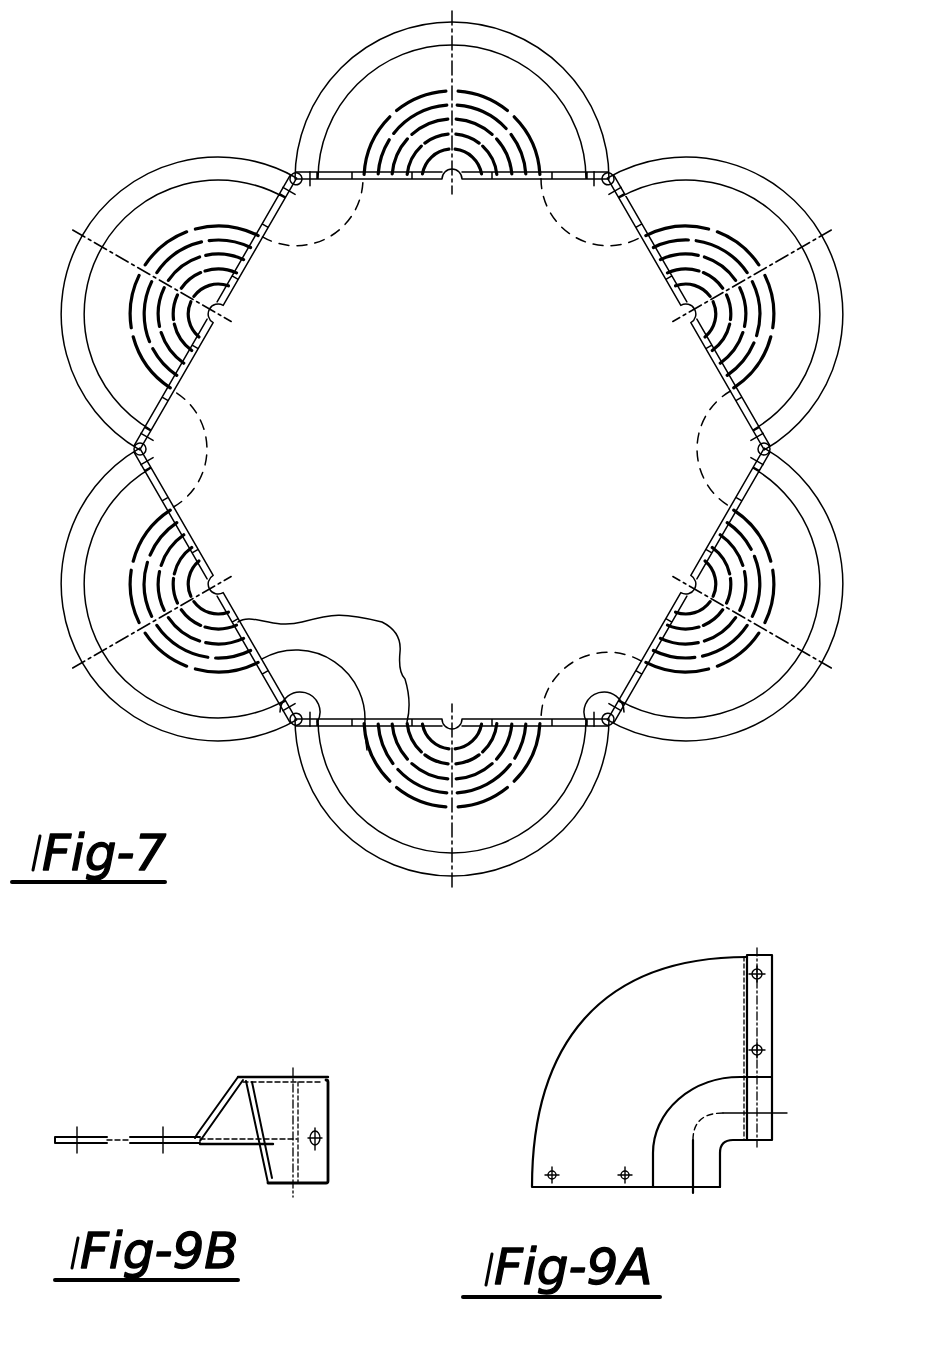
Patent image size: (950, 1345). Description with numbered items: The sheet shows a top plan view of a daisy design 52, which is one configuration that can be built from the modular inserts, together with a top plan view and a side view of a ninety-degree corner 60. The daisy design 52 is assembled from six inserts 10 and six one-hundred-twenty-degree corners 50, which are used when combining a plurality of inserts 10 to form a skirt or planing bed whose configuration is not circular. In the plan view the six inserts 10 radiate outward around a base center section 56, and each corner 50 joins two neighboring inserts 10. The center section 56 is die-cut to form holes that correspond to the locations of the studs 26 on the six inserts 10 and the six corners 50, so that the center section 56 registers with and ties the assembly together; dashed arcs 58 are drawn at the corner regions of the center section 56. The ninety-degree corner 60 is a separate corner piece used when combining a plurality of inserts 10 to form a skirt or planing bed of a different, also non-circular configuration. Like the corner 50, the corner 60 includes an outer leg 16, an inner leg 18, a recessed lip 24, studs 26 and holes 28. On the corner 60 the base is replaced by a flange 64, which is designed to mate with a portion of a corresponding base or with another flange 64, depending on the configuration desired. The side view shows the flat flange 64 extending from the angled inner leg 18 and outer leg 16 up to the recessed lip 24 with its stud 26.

In FIG. 7, the insert 10 is at (493, 36).
In FIG. 7, the 120° corner 50 is at (298, 172).
In FIG. 7, the daisy design 52 is at (455, 445).
In FIG. 7, the base center section 56 is at (466, 443).
In FIG. 7, the corner clearance circle 58 is at (192, 400).
In FIG. 9A, the 90° corner 60 is at (675, 1090).
In FIG. 9B, the 90° corner 60 is at (222, 1099).
In FIG. 9A, the flange 64 is at (639, 1095).
In FIG. 9B, the flange 64 is at (105, 1147).
In FIG. 9A, the recessed lip 24 is at (773, 1020).
In FIG. 9B, the recessed lip 24 is at (313, 1102).
In FIG. 9A, the studs 26 is at (762, 1052).
In FIG. 9A, the holes 28 is at (624, 1180).
In FIG. 9B, the inner leg 18 is at (210, 1113).
In FIG. 9B, the outer leg 16 is at (262, 1165).